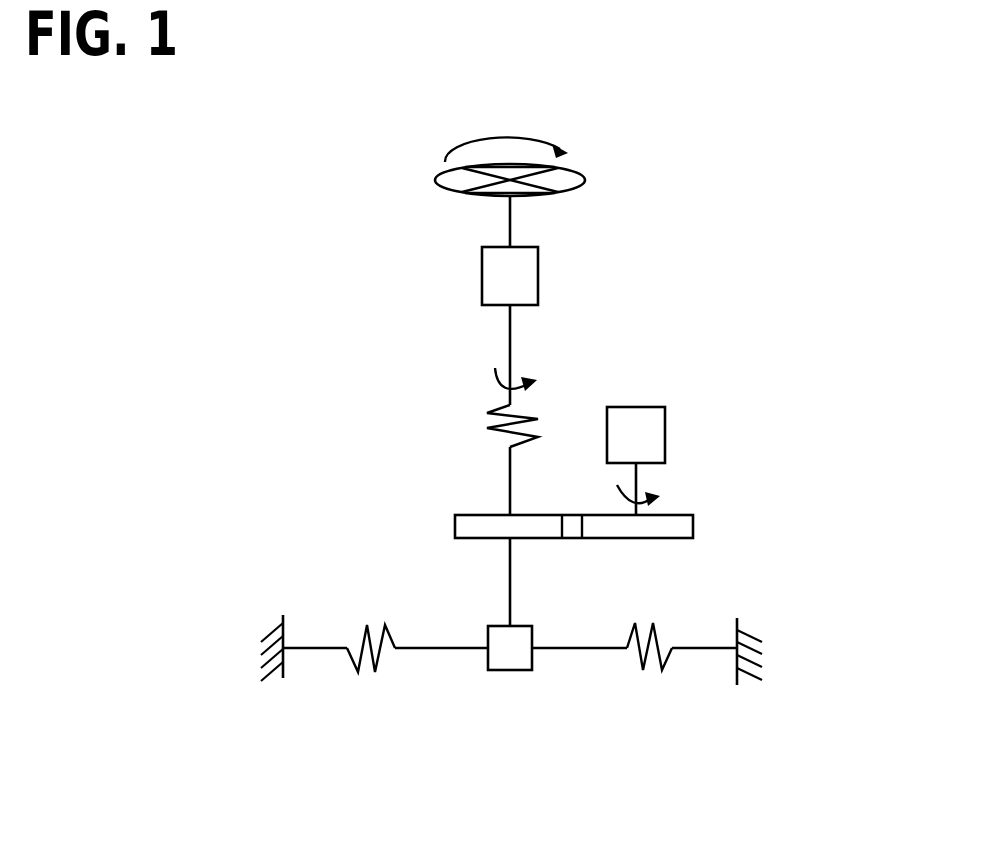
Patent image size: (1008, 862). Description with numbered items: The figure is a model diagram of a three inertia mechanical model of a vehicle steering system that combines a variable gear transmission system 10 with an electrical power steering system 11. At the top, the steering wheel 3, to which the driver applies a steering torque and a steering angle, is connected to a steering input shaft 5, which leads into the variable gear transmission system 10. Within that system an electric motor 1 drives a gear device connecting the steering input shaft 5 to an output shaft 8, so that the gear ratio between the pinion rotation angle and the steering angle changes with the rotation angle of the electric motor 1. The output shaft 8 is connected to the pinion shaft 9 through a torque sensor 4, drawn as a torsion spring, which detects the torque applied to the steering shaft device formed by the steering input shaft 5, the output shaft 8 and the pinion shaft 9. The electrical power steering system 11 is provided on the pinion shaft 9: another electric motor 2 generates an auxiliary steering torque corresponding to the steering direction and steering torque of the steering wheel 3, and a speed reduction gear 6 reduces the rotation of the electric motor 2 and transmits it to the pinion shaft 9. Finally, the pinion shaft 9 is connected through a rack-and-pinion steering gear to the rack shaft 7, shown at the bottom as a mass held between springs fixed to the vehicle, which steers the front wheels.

The electric motor 1 is at (539, 263).
The electric motor 2 is at (665, 432).
The steering wheel 3 is at (436, 180).
The torque sensor 4 is at (495, 408).
The steering input shaft 5 is at (510, 215).
The speed reduction gear 6 is at (598, 538).
The rack shaft 7 is at (722, 687).
The output shaft 8 is at (510, 343).
The pinion shaft 9 is at (510, 582).
The variable gear transmission system 10 is at (650, 271).
The electrical power steering system 11 is at (788, 482).